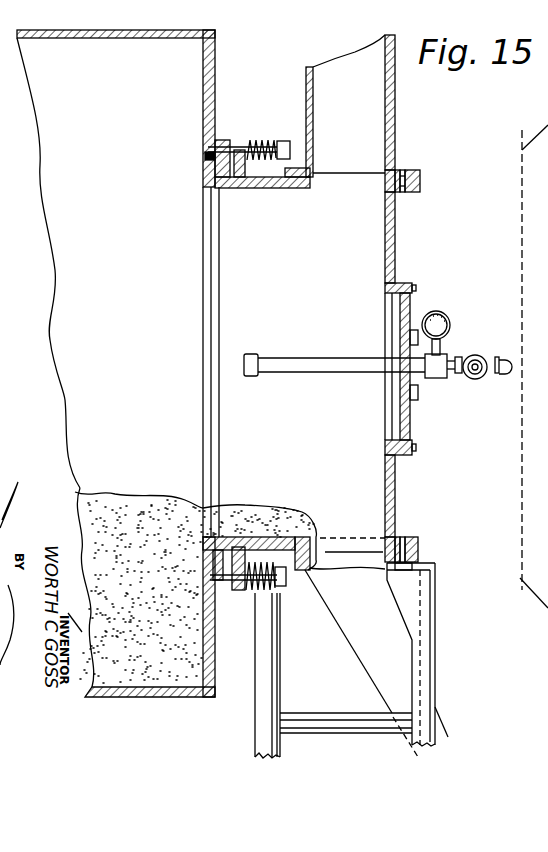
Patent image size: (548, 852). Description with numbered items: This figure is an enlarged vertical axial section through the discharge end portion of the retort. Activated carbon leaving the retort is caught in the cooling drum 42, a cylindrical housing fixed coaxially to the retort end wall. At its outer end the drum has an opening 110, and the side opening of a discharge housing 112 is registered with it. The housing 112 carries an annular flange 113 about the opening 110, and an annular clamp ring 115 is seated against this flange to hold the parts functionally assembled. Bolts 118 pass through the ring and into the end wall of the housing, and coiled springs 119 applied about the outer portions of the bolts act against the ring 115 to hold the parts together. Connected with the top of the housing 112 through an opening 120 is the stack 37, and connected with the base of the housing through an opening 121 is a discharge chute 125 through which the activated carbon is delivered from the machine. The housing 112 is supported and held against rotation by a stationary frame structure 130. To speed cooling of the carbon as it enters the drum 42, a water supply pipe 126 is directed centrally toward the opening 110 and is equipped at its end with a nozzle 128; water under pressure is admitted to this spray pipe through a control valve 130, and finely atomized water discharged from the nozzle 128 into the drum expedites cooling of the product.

The cooling drum 42 is at (216, 58).
The stack 37 is at (396, 90).
The opening 120 is at (386, 172).
The discharge housing 112 is at (396, 243).
The opening 110 is at (205, 400).
The coiled springs 119 is at (250, 190).
The annular flange 113 is at (239, 148).
The annular clamp ring 115 is at (252, 142).
The bolts 118 is at (273, 152).
The nozzle 128 is at (252, 354).
The water supply pipe 126 is at (332, 362).
The stationary frame structure 130 is at (475, 364).
The opening 121 is at (400, 527).
The discharge chute 125 is at (388, 633).